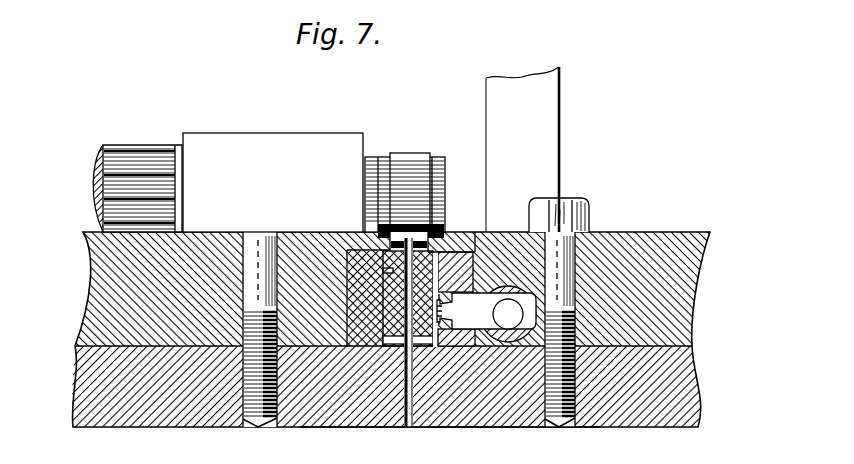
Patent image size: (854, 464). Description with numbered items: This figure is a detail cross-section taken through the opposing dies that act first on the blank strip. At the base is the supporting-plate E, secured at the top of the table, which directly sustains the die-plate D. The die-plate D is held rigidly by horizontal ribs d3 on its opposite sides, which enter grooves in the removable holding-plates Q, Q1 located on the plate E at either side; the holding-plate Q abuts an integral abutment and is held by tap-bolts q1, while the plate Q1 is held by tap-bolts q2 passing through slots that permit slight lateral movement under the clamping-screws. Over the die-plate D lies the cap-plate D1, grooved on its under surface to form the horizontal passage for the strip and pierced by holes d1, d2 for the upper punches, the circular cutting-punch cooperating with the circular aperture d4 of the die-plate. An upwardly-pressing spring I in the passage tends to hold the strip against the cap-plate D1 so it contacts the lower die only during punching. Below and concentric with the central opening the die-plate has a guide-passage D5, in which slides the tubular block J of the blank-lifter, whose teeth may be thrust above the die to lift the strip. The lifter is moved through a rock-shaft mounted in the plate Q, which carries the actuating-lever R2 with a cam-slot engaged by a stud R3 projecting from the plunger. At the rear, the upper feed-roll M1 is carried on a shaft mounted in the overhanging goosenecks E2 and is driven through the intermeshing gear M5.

The holding-plate Q is at (680, 292).
The holding-plate Q1 is at (110, 291).
The tap-bolts q1 is at (590, 213).
The tap-bolts q2 is at (288, 208).
The supporting-plate E is at (453, 428).
The overhanging arms or goosenecks E2 is at (273, 182).
The gear M5 is at (137, 153).
The upper feed-roll M1 is at (414, 168).
The actuating-lever R2 is at (522, 149).
The stud R3 is at (508, 301).
The die-plate D is at (485, 232).
The cap-plate D1 is at (461, 232).
The guide-passage D5 is at (393, 338).
The hole d1 is at (453, 289).
The hole d2 is at (465, 302).
The horizontal ribs or projections d3 is at (354, 298).
The aperture d4 is at (372, 258).
The upwardly-pressing spring I is at (486, 311).
The tubular block J is at (373, 338).